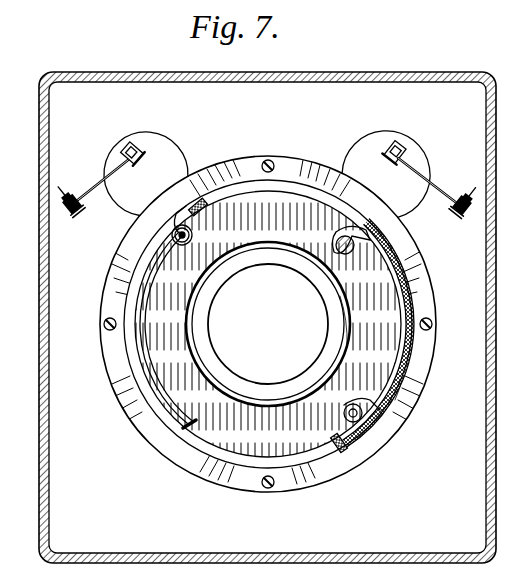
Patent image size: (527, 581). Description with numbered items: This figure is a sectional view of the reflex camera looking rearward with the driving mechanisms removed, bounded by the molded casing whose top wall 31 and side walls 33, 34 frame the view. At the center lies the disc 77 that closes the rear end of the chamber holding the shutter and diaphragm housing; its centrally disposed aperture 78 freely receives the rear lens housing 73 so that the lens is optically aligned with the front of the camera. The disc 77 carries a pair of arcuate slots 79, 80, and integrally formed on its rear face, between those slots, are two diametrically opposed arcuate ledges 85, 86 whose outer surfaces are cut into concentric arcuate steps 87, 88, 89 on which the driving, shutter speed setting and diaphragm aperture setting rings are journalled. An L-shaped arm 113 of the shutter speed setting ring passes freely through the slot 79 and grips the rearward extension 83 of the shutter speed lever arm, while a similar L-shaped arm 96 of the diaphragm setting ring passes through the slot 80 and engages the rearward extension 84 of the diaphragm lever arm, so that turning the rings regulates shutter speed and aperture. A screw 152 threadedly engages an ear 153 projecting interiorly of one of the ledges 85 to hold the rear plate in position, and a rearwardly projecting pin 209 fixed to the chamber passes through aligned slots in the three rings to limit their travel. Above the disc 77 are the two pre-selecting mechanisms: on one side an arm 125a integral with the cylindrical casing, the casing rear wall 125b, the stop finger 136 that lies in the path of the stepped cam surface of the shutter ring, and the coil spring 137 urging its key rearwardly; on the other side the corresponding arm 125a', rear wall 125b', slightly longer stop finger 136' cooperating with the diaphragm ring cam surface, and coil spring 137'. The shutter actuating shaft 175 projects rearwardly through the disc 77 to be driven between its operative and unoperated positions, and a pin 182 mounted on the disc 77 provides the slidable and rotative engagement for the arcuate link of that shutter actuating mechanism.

The top wall 31 is at (326, 72).
The side wall 33 is at (40, 340).
The side wall 34 is at (496, 310).
The rear lens housing 73 is at (290, 260).
The disc 77 is at (287, 182).
The centrally disposed aperture 78 is at (232, 390).
The arcuate slot 79 is at (245, 190).
The arcuate slot 80 is at (238, 460).
The rearward extension 83 is at (204, 214).
The rearward extension 84 is at (336, 438).
The arcuate ledge 85 is at (136, 328).
The arcuate ledge 86 is at (430, 332).
The concentric arcuate step 87 is at (414, 298).
The concentric arcuate step 88 is at (410, 268).
The concentric arcuate step 89 is at (404, 376).
The L-shaped arm 96 is at (333, 450).
The L-shaped arm 113 is at (186, 200).
The arm 125a is at (412, 135).
The arm 125a' is at (121, 136).
The rear wall 125b is at (320, 147).
The rear wall 125b' is at (210, 128).
The stop finger 136 is at (386, 161).
The stop finger 136' is at (146, 154).
The coil spring 137 is at (440, 183).
The coil spring 137' is at (90, 182).
The screw 152 is at (188, 243).
The ear 153 is at (182, 243).
The shutter actuating shaft 175 is at (355, 247).
The pin 182 is at (366, 395).
The rearwardly projecting pin 209 is at (106, 328).